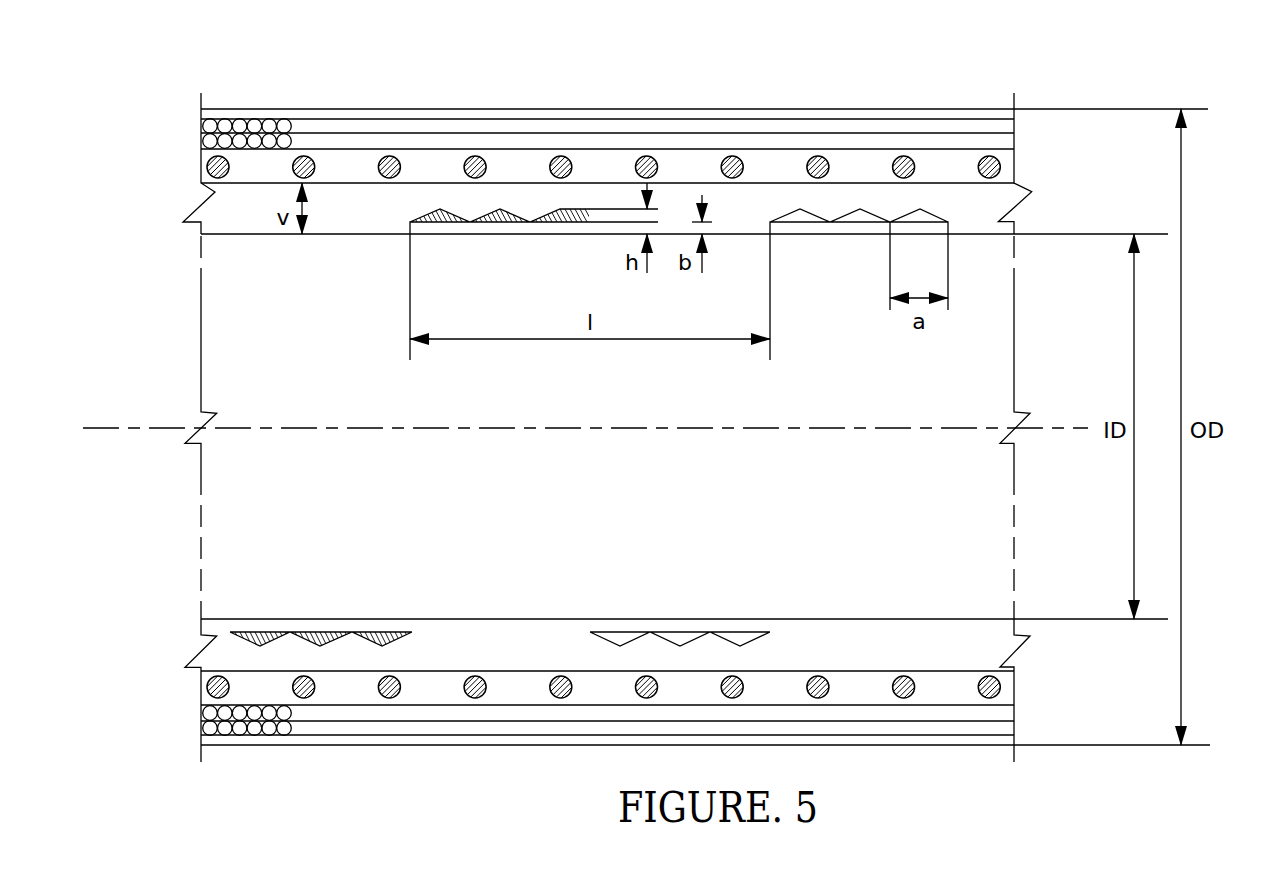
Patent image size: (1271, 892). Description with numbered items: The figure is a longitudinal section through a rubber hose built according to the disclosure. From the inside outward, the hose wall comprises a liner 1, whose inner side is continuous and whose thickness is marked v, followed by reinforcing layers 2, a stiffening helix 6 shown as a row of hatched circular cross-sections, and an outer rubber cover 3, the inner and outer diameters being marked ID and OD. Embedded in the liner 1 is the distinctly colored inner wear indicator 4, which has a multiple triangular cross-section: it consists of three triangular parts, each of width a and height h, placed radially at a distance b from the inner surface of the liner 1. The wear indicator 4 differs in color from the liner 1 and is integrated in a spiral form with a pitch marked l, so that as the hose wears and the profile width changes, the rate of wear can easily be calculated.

The hose liner 1 is at (239, 205).
The reinforcing layer 2 is at (259, 117).
The cover 3 is at (608, 114).
The distinctly colored wear indicator 4 is at (738, 641).
The stiffening helix 6 is at (902, 152).